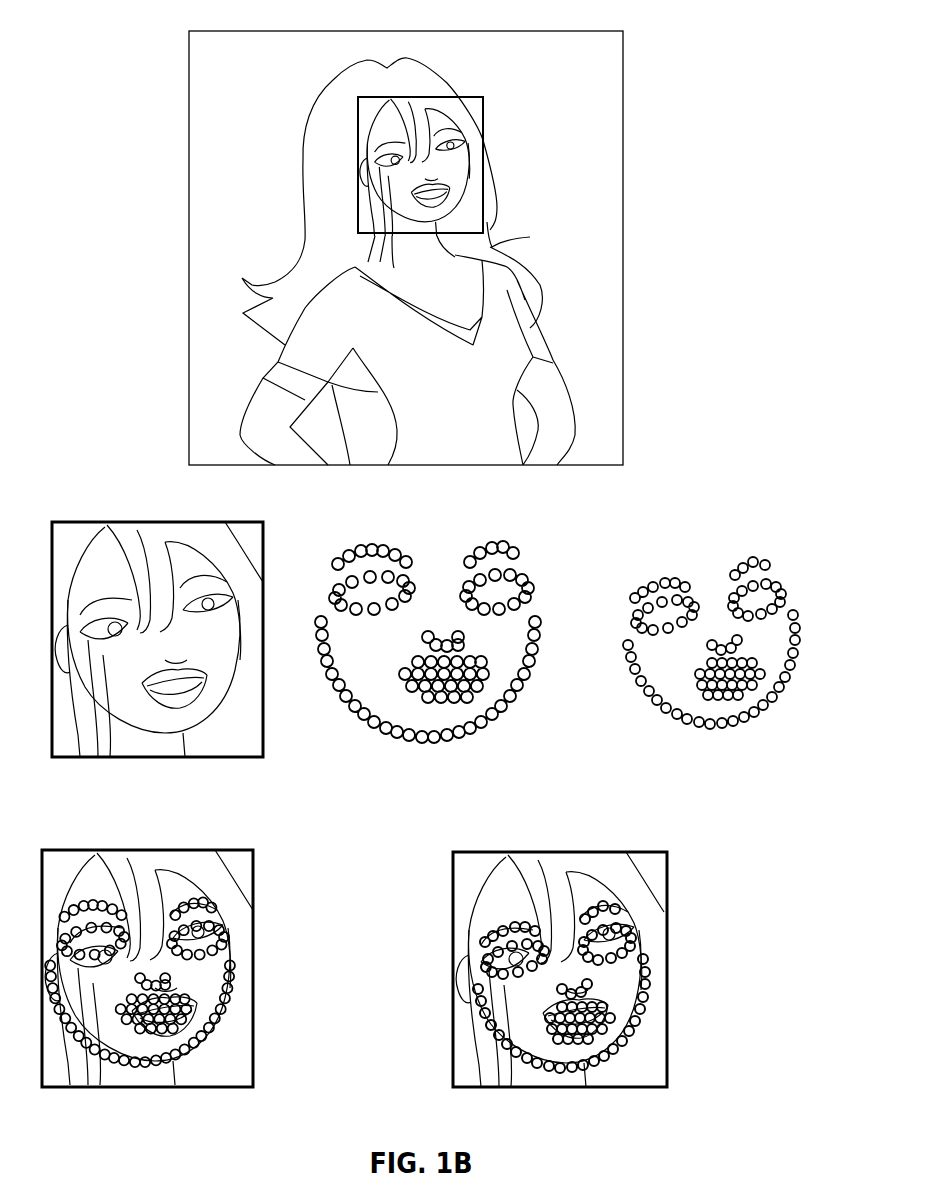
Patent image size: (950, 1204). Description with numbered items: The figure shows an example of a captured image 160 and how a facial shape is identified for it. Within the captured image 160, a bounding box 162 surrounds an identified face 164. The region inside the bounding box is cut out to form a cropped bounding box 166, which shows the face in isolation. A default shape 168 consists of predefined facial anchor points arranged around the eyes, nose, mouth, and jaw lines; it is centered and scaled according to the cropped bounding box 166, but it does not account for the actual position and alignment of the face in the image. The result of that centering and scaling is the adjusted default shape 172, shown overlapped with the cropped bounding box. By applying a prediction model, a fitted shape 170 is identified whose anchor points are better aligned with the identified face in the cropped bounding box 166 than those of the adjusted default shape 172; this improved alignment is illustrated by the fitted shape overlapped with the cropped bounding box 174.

The captured image 160 is at (560, 90).
The bounding box 162 is at (492, 157).
The identified face 164 is at (440, 192).
The cropped bounding box 166 is at (142, 826).
The default shape 168 is at (427, 801).
The fitted shape 170 is at (706, 784).
The adjusted default shape 172 is at (325, 1031).
The fitted shape overlapped with cropped bounding box 174 is at (737, 1017).